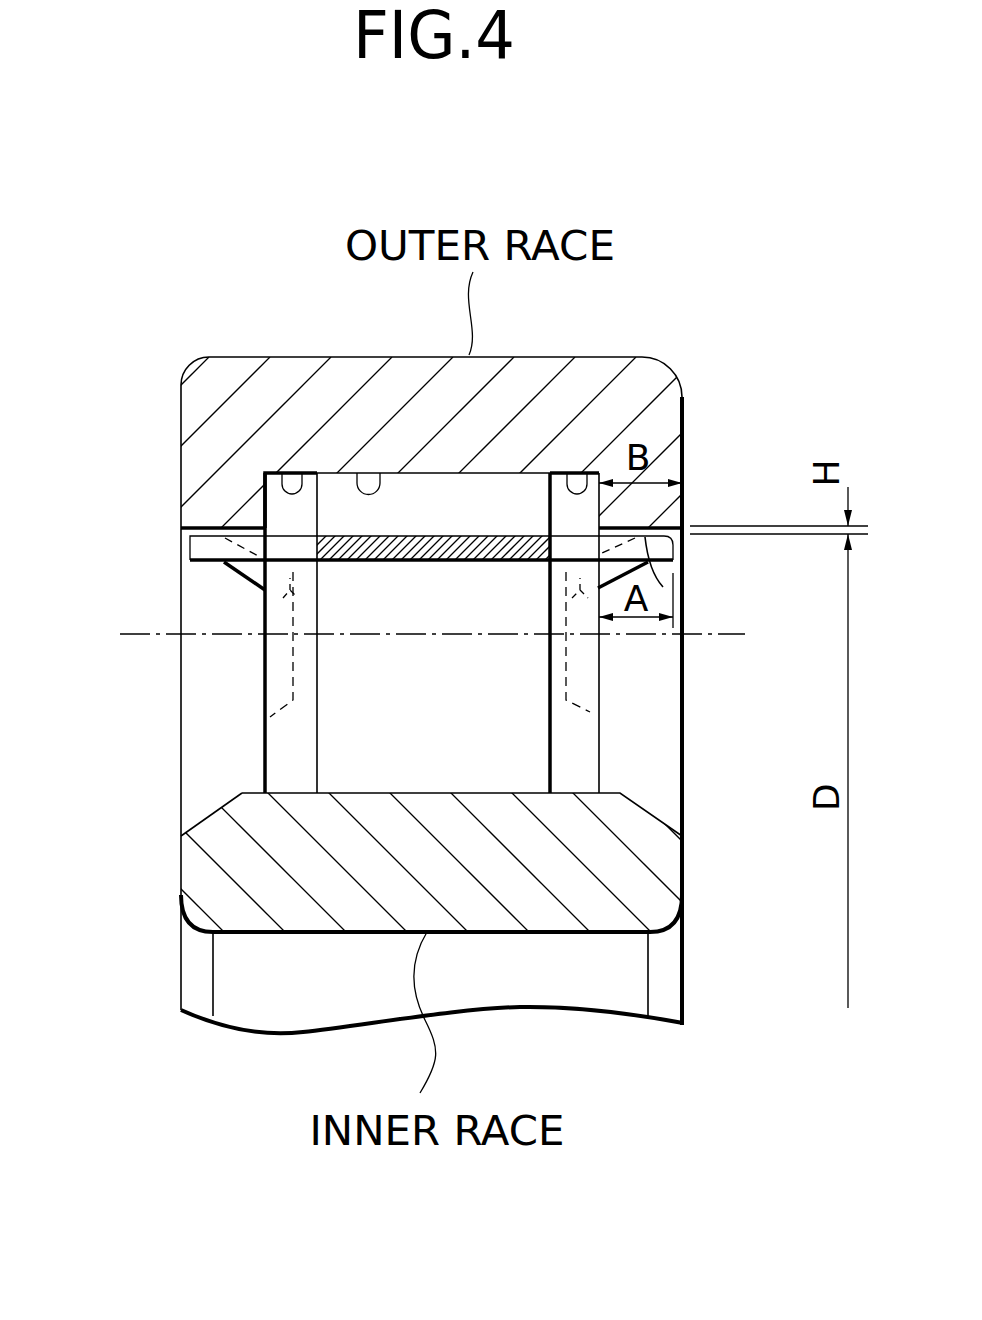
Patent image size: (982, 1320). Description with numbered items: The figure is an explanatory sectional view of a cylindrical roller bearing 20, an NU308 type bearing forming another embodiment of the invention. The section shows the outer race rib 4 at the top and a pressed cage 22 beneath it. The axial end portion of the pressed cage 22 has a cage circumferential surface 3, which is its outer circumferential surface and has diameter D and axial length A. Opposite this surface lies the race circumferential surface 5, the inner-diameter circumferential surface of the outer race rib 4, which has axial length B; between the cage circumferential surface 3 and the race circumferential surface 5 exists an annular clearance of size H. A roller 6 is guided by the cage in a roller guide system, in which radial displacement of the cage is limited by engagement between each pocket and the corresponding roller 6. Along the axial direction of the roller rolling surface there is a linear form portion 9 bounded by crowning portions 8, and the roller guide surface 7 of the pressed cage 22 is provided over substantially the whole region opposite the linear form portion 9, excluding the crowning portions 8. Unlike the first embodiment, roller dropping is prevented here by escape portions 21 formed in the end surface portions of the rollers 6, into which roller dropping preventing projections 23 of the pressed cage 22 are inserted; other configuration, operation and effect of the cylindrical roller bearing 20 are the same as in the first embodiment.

The cylindrical roller bearing 20 is at (748, 312).
The outer race rib 4 is at (637, 382).
The cage circumferential surface 3 is at (658, 527).
The race circumferential surface 5 is at (663, 587).
The roller 6 is at (530, 720).
The roller guide surface 7 is at (290, 525).
The crowning portions 8 is at (290, 470).
The linear form portion 9 is at (365, 472).
The escape portions 21 is at (272, 677).
The pressed cage 22 is at (200, 562).
The roller dropping preventing projections 23 is at (310, 590).